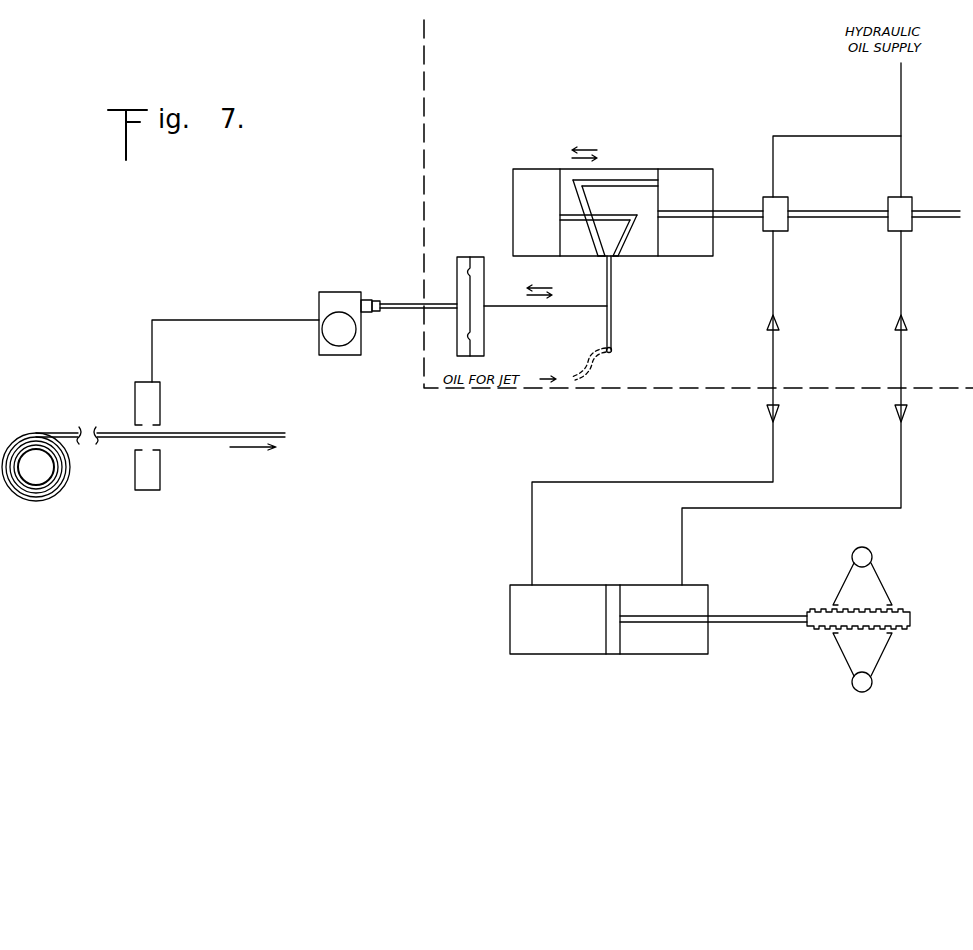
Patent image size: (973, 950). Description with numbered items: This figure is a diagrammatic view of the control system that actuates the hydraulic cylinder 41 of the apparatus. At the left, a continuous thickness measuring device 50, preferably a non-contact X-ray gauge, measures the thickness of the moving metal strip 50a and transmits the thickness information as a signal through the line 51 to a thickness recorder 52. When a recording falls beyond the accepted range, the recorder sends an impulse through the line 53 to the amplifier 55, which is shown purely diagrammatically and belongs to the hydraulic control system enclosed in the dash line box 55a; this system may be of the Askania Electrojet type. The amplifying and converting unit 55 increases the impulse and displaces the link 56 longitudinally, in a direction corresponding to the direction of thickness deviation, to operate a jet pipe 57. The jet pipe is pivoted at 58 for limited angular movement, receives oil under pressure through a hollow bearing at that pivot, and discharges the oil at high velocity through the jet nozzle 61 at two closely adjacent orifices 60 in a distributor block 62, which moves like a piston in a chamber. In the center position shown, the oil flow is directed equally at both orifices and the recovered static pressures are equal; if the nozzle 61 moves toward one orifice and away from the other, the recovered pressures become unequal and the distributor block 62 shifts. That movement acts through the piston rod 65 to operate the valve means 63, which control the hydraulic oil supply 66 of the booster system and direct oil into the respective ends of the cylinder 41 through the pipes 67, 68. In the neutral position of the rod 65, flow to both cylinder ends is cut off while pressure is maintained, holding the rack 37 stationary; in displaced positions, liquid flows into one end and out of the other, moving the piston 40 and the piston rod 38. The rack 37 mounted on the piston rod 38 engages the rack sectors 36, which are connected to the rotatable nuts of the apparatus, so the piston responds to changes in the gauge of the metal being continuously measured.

The rack sectors 36 is at (880, 591).
The rack 37 is at (910, 622).
The piston rod 38 is at (755, 612).
The piston 40 is at (614, 592).
The hydraulic cylinder 41 is at (580, 585).
The thickness measuring device 50 is at (135, 398).
The metal strip 50a is at (210, 430).
The line 51 is at (240, 320).
The thickness recorder 52 is at (340, 292).
The line 53 is at (400, 308).
The amplifier 55 is at (484, 340).
The dash line box 55a is at (424, 170).
The link 56 is at (545, 308).
The jet pipe 57 is at (611, 321).
The pivot 58 is at (611, 352).
The orifices 60 is at (602, 258).
The jet nozzle 61 is at (612, 261).
The distributor block 62 is at (612, 172).
The valve means 63 is at (780, 204).
The piston rod 65 is at (738, 210).
The hydraulic oil supply 66 is at (902, 100).
The pipe 67 is at (902, 163).
The pipe 68 is at (786, 136).